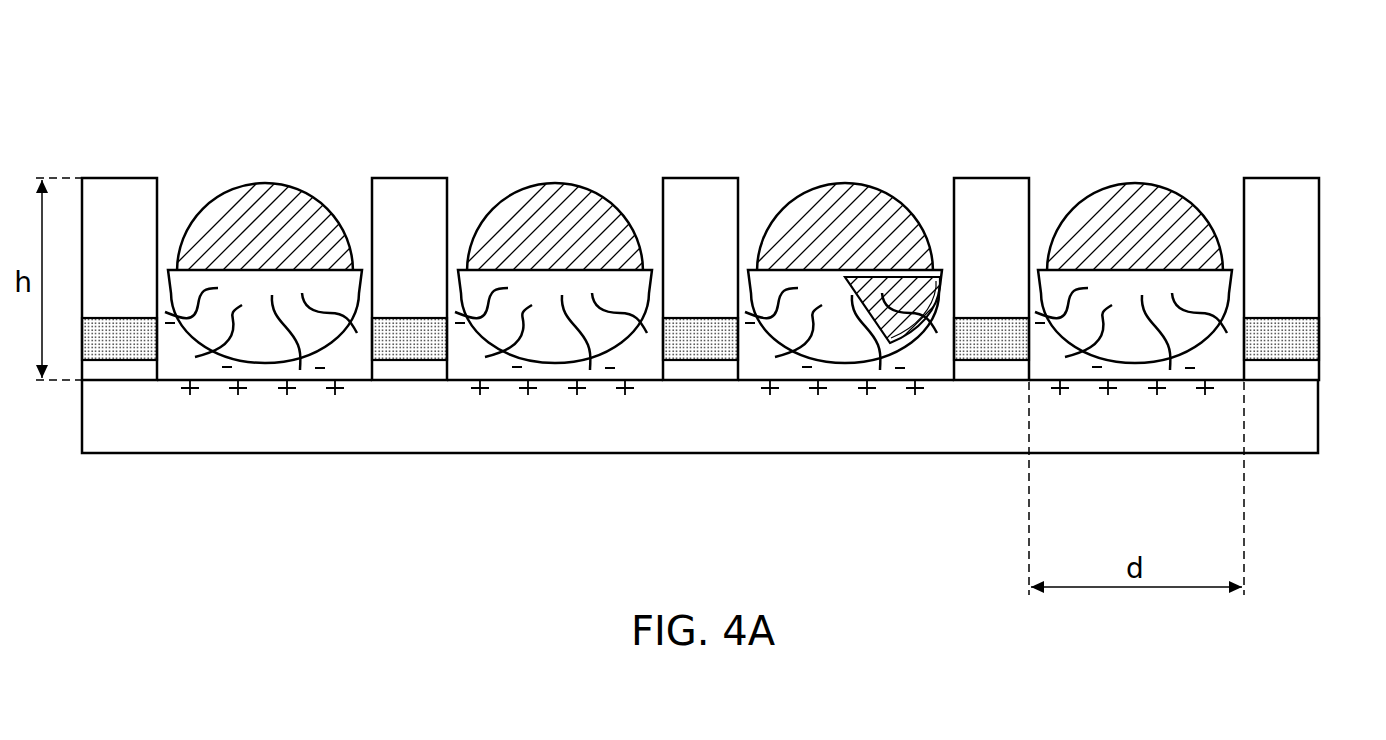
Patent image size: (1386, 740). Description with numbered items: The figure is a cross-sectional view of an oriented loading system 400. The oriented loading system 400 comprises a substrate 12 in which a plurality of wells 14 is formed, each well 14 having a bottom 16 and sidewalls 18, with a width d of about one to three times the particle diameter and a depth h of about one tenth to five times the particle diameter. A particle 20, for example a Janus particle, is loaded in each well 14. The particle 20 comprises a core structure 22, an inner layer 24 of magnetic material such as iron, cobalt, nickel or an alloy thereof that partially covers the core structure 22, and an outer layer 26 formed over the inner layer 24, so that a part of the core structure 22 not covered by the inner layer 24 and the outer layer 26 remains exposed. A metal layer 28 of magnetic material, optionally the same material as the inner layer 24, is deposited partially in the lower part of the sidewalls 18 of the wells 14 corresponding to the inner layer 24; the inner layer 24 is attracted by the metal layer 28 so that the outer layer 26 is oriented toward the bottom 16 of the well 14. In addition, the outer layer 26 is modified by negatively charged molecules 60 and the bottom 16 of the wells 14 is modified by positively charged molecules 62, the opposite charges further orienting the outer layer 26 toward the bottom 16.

The oriented loading system 400 is at (1322, 83).
The substrate 12 is at (1306, 432).
The well 14 is at (174, 367).
The bottom 16 is at (1229, 377).
The sidewalls 18 is at (1032, 206).
The particle 20 is at (736, 176).
The core structure 22 is at (822, 203).
The inner layer 24 is at (940, 290).
The outer layer 26 is at (843, 340).
The metal layer 28 is at (118, 337).
The negatively charged molecules 60 is at (1203, 314).
The positively charged molecules 62 is at (1157, 391).